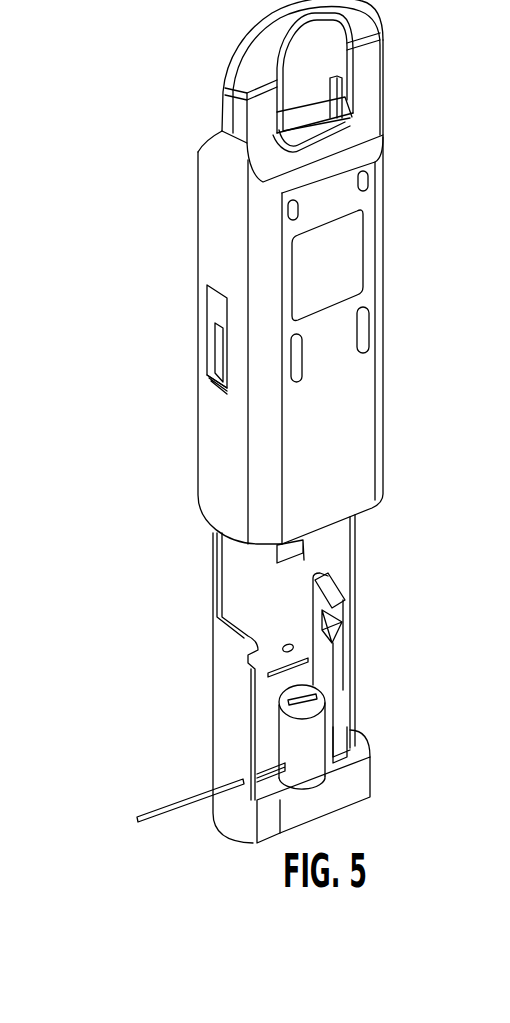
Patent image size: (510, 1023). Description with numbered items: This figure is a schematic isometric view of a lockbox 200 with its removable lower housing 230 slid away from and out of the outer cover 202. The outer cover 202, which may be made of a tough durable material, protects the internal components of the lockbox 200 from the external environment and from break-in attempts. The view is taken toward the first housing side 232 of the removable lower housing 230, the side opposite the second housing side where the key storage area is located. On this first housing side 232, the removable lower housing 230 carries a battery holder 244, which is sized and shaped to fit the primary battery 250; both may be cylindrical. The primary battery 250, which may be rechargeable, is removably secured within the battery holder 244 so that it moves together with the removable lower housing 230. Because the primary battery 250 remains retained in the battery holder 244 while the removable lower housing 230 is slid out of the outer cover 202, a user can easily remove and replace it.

The lockbox 200 is at (82, 116).
The outer cover 202 is at (212, 257).
The removable lower housing 230 is at (215, 722).
The first housing side 232 is at (340, 568).
The battery holder 244 is at (313, 760).
The primary battery 250 is at (323, 693).